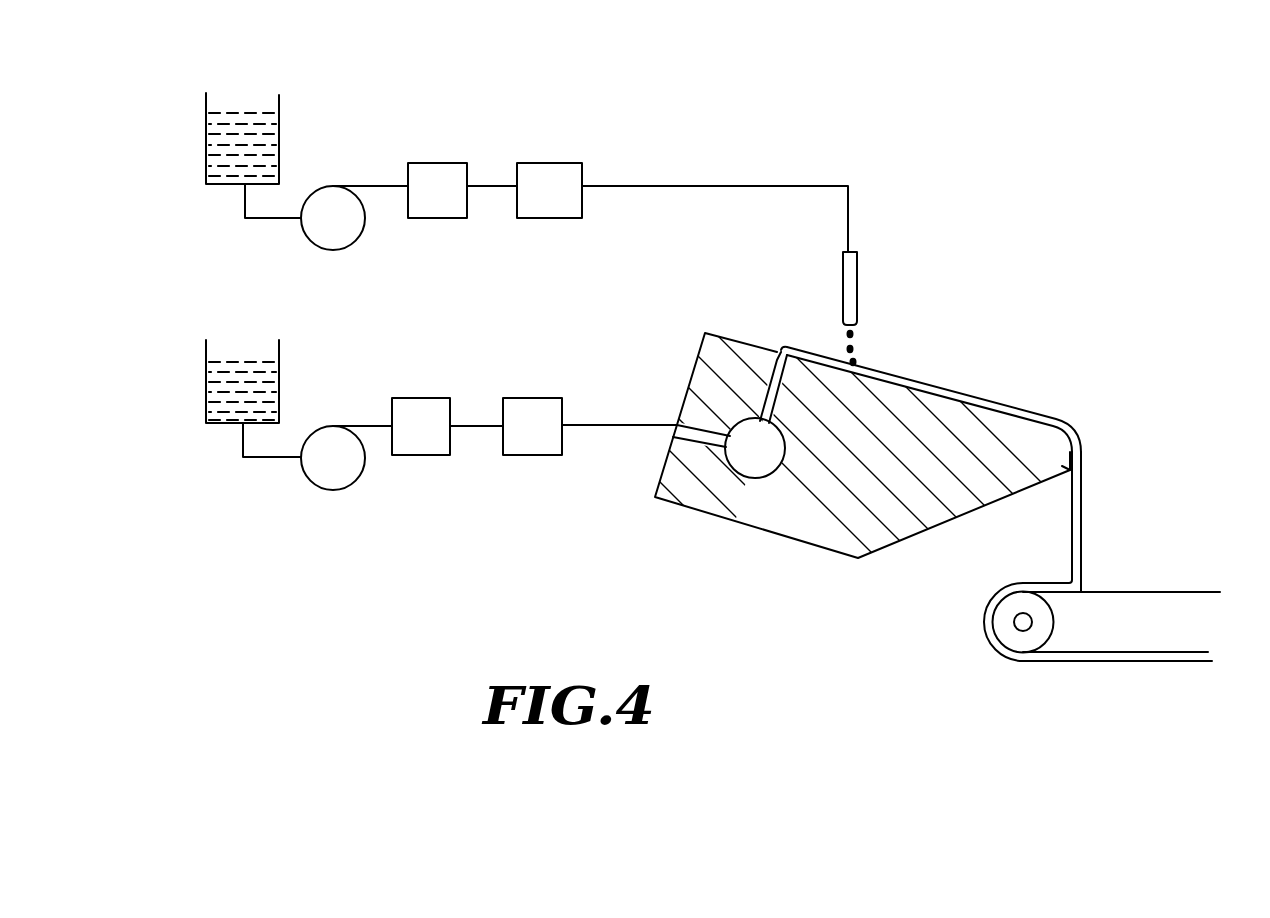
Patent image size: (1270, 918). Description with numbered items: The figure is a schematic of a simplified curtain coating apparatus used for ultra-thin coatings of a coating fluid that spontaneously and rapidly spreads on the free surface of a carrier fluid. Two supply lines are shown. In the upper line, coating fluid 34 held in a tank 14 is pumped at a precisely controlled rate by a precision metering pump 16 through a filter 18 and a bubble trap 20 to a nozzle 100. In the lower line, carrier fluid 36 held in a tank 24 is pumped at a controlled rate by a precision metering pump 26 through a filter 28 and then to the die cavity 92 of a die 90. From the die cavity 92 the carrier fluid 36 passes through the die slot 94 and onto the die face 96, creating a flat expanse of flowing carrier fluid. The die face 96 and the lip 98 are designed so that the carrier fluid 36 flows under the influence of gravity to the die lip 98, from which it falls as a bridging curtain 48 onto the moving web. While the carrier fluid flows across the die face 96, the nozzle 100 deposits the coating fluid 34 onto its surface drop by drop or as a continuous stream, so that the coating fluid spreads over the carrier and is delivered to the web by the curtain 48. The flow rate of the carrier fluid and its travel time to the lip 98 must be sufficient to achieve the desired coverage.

The tank 14 is at (280, 138).
The coating fluid 34 is at (252, 120).
The precision metering pump 16 is at (350, 238).
The filter 18 is at (442, 175).
The bubble trap 20 is at (552, 173).
The tank 24 is at (280, 370).
The carrier fluid 36 is at (243, 363).
The precision metering pump 26 is at (345, 482).
The filter 28 is at (422, 405).
The die 90 is at (813, 447).
The die cavity 92 is at (765, 473).
The die slot 94 is at (775, 370).
The die face 96 is at (953, 403).
The die lip 98 is at (1057, 472).
The nozzle 100 is at (858, 287).
The bridging curtain 48 is at (1083, 523).